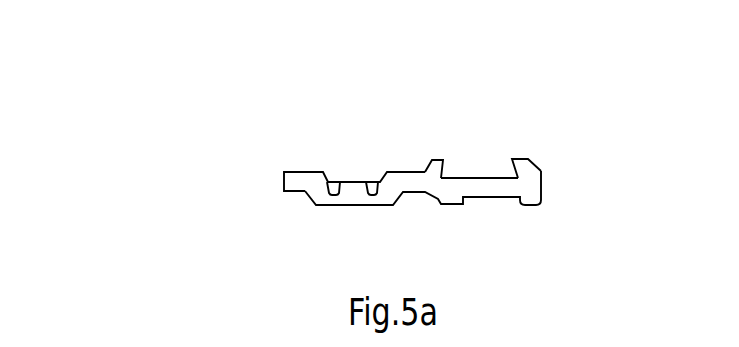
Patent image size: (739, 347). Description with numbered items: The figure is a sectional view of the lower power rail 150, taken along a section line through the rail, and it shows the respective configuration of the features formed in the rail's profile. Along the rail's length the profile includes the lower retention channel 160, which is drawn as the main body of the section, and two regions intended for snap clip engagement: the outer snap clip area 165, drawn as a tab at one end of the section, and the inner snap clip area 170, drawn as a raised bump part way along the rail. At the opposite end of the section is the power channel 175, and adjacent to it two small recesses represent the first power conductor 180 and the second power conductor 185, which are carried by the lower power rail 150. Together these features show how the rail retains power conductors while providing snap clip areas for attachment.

The lower power rail 150 is at (220, 215).
The lower retention channel 160 is at (482, 169).
The outer snap clip area 165 is at (531, 163).
The inner snap clip area 170 is at (438, 176).
The power channel 175 is at (319, 167).
The first power conductor 180 is at (377, 171).
The second power conductor 185 is at (334, 181).